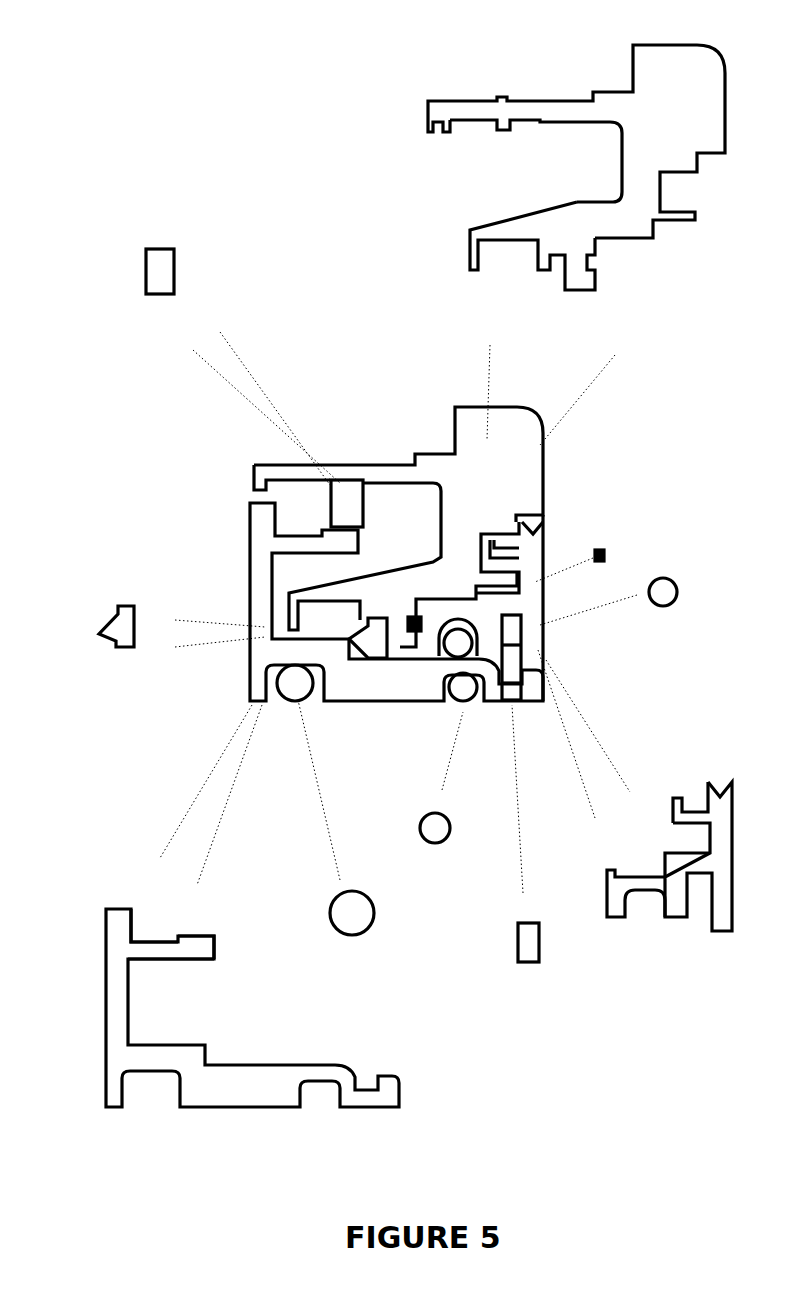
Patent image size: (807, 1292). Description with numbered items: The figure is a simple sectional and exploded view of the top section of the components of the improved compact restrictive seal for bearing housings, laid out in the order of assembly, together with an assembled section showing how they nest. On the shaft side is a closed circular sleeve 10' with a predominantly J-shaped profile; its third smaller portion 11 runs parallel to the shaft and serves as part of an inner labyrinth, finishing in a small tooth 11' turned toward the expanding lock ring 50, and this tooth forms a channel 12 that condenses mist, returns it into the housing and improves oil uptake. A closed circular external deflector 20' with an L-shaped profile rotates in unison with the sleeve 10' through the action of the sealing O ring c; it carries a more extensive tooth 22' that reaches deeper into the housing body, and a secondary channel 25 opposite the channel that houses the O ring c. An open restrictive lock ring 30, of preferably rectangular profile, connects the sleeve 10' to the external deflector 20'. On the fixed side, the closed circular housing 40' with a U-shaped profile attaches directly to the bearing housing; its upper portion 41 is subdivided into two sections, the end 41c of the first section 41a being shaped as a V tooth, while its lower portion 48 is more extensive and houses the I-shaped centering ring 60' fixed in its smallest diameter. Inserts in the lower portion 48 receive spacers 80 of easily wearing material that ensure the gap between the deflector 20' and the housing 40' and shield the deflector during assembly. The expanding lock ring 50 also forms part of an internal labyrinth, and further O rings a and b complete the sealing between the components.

The sleeve 10' is at (213, 976).
The third smaller portion 11 is at (121, 942).
The small tooth 11' is at (226, 964).
The channel 12 is at (162, 930).
The external deflector 20' is at (674, 824).
The tooth 22' is at (675, 770).
The secondary channel 25 is at (637, 875).
The restrictive lock ring 30 is at (527, 942).
The housing 40' is at (559, 157).
The upper portion 41 is at (567, 113).
The first section 41a is at (497, 110).
The end 41c is at (428, 110).
The lower portion 48 is at (555, 227).
The expanding lock ring 50 is at (160, 270).
The centering ring 60' is at (99, 651).
The spacer 80 is at (605, 548).
The O ring a is at (352, 912).
The O ring b is at (433, 827).
The sealing O ring c is at (663, 592).